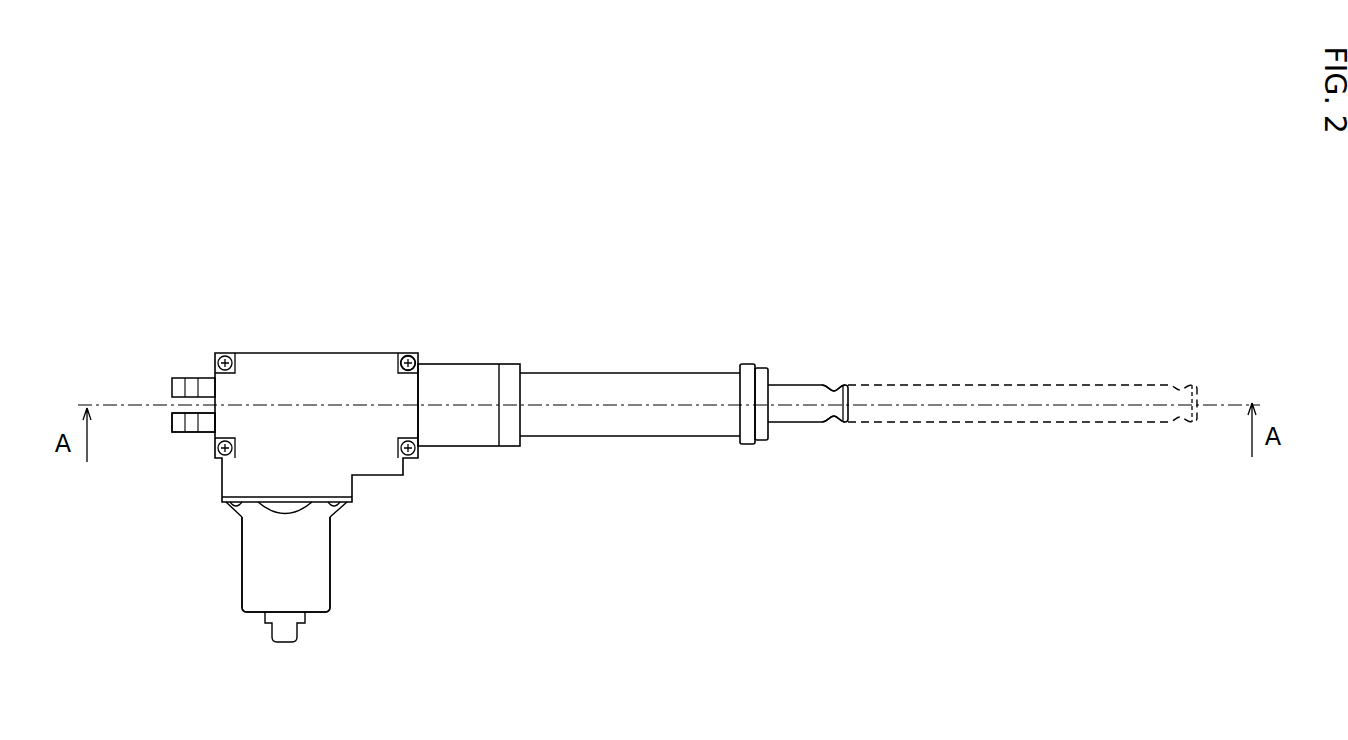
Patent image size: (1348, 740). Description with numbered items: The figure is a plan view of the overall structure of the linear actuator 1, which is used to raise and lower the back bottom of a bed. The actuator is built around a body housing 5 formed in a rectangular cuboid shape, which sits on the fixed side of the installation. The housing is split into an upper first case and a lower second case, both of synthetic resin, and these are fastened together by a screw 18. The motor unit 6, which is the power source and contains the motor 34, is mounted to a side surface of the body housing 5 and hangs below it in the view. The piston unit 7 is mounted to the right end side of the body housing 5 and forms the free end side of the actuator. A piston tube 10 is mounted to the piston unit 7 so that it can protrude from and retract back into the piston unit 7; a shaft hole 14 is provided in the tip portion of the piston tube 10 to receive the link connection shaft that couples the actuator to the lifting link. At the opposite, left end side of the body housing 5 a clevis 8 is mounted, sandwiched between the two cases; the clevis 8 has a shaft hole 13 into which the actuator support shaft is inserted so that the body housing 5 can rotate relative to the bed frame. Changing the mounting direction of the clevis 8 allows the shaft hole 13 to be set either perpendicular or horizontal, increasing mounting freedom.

The linear actuator 1 is at (558, 342).
The body housing 5 is at (314, 377).
The motor unit 6 is at (308, 596).
The piston unit 7 is at (698, 417).
The clevis 8 is at (172, 425).
The piston tube 10 is at (797, 393).
The shaft hole 13 is at (198, 433).
The shaft hole 14 is at (824, 421).
The screw 18 is at (416, 355).
The motor 34 is at (263, 569).